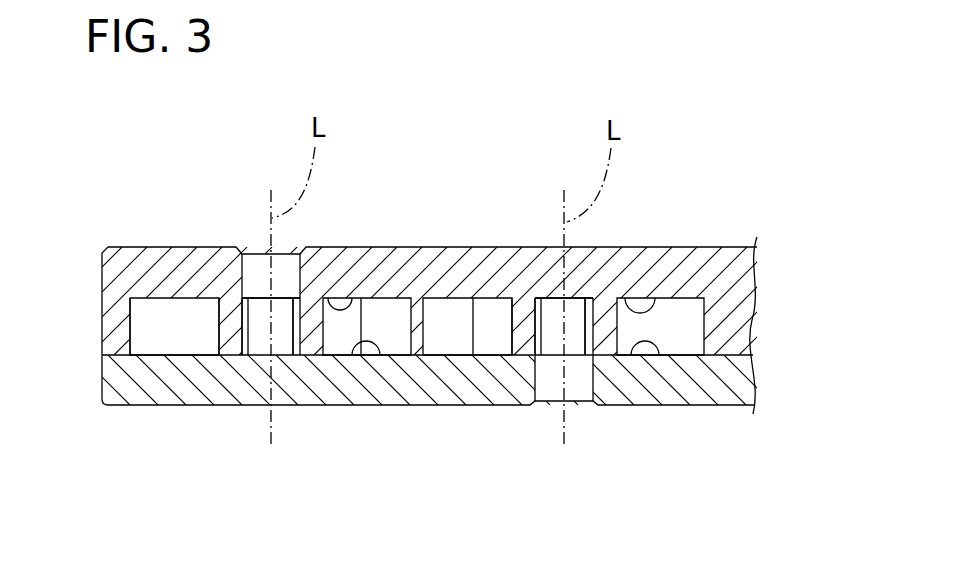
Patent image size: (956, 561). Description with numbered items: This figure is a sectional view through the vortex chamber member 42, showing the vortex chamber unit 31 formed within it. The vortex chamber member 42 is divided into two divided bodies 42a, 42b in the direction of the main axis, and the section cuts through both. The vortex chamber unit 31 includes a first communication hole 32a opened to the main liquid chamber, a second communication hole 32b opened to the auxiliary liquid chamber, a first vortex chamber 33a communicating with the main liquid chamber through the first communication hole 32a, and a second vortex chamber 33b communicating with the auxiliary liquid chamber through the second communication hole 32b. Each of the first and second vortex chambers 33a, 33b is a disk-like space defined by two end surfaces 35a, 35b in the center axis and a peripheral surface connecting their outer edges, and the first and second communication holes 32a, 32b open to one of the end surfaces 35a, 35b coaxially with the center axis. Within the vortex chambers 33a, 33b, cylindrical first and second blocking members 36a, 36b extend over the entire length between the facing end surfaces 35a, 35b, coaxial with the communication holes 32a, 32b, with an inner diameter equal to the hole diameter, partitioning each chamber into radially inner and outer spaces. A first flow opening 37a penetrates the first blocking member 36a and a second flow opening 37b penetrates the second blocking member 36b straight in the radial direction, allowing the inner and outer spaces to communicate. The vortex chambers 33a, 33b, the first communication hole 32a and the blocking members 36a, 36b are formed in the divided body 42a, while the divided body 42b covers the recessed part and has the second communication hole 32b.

The vortex chamber unit 31 is at (141, 323).
The first communication hole 32a is at (262, 260).
The second communication hole 32b is at (553, 380).
The first vortex chamber 33a is at (181, 343).
The second vortex chamber 33b is at (490, 310).
The end surface 35a is at (349, 305).
The end surface 35b is at (653, 303).
The first blocking member 36a is at (228, 343).
The second blocking member 36b is at (525, 343).
The first flow opening 37a is at (291, 336).
The second flow opening 37b is at (570, 336).
The vortex chamber member 42 is at (106, 247).
The divided body 42a is at (727, 247).
The divided body 42b is at (712, 406).